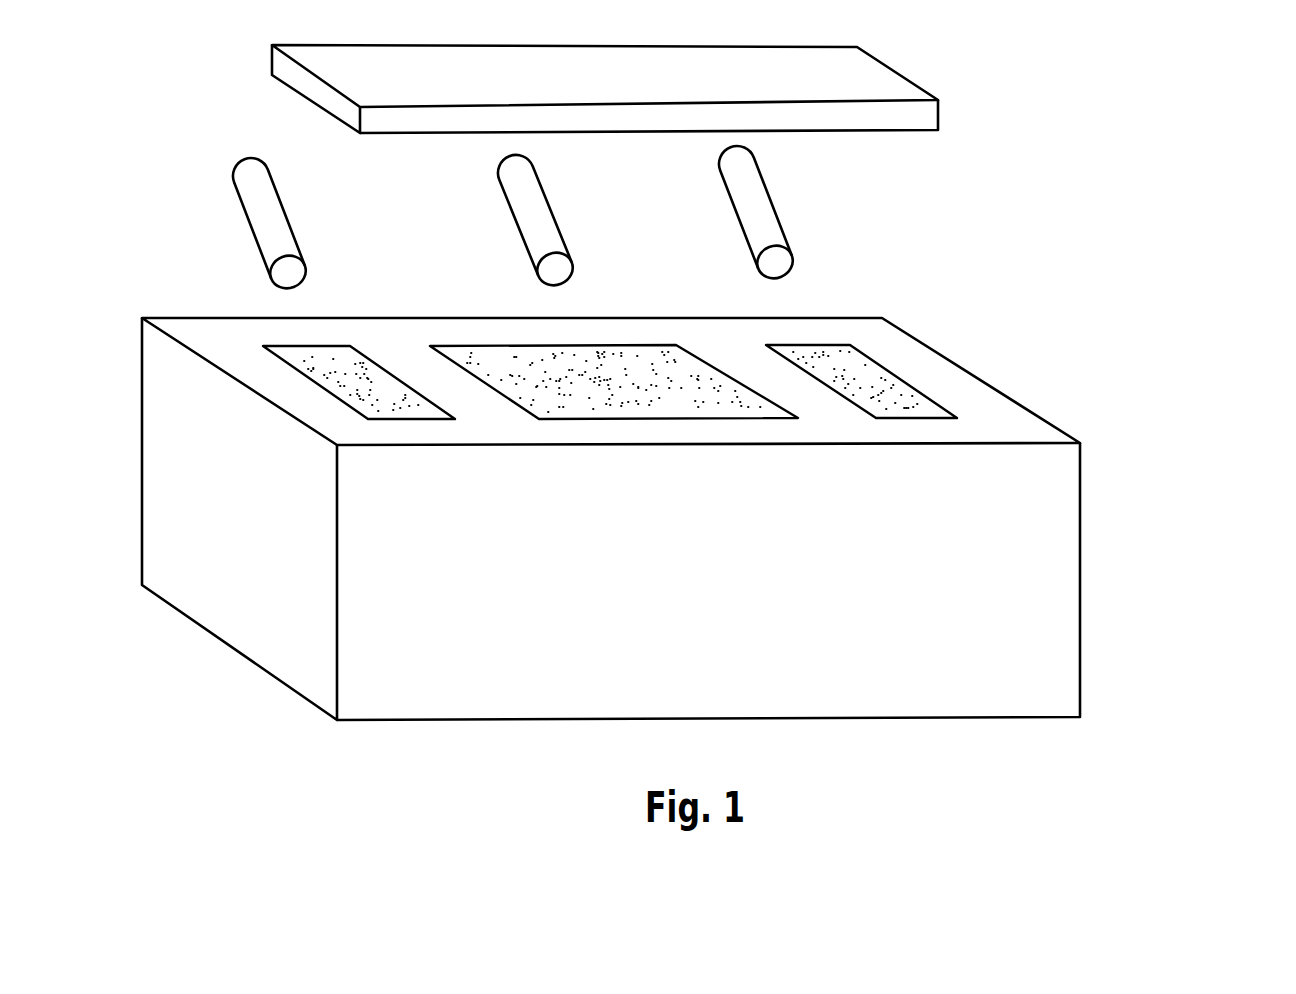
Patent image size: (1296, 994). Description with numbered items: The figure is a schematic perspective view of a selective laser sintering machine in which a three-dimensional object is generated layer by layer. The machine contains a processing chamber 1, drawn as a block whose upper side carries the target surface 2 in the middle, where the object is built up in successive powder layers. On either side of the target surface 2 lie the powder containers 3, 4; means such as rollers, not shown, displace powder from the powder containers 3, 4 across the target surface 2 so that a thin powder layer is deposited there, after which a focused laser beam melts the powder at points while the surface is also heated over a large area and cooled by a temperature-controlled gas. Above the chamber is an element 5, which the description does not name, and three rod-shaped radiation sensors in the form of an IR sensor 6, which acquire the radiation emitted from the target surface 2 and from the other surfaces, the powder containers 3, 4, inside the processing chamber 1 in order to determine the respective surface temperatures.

The processing chamber 1 is at (1100, 374).
The target surface 2 is at (634, 365).
The powder container 3 is at (361, 376).
The powder container 4 is at (851, 361).
The cover plate 5 is at (873, 90).
The IR sensor 6 is at (273, 232).